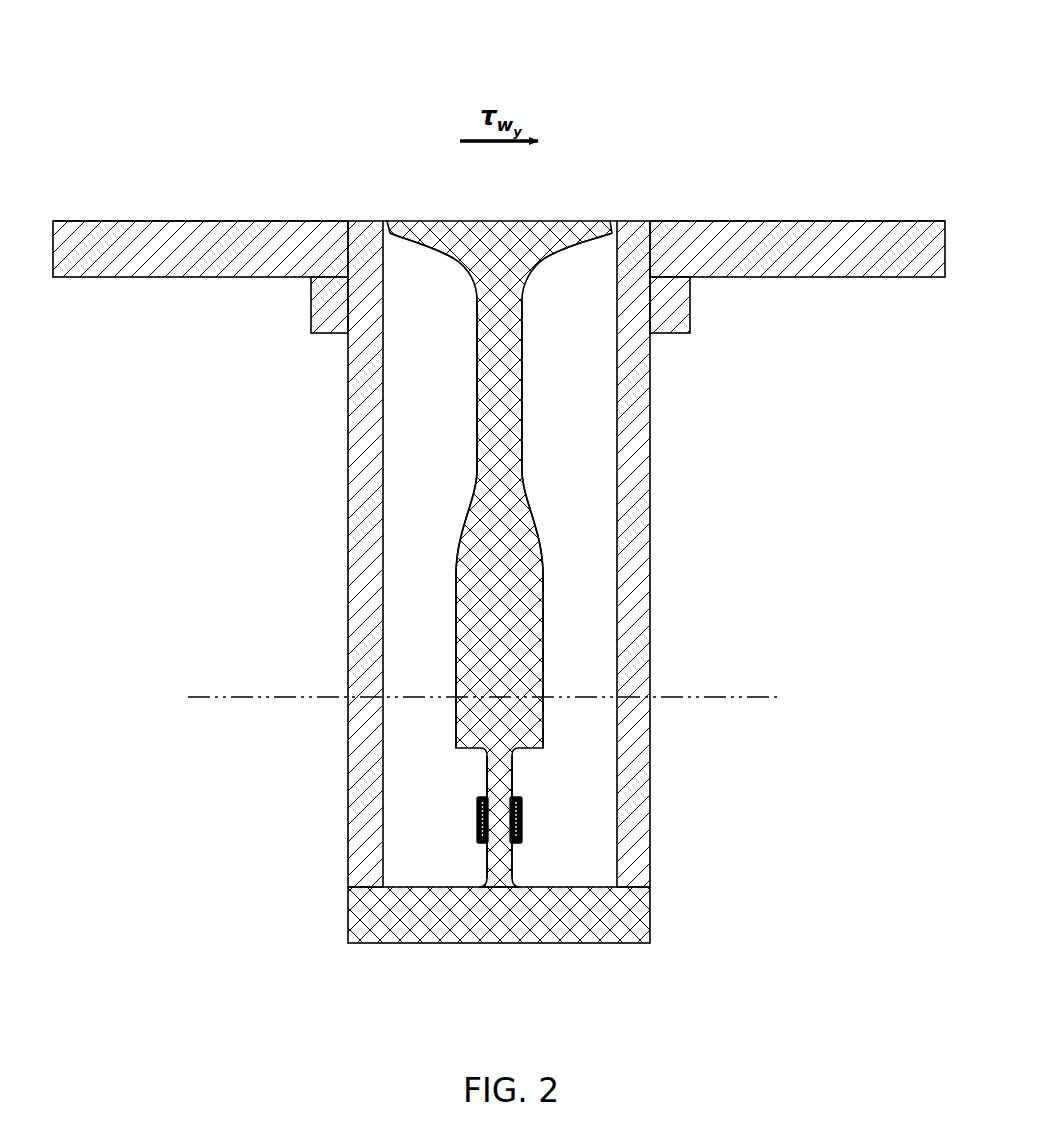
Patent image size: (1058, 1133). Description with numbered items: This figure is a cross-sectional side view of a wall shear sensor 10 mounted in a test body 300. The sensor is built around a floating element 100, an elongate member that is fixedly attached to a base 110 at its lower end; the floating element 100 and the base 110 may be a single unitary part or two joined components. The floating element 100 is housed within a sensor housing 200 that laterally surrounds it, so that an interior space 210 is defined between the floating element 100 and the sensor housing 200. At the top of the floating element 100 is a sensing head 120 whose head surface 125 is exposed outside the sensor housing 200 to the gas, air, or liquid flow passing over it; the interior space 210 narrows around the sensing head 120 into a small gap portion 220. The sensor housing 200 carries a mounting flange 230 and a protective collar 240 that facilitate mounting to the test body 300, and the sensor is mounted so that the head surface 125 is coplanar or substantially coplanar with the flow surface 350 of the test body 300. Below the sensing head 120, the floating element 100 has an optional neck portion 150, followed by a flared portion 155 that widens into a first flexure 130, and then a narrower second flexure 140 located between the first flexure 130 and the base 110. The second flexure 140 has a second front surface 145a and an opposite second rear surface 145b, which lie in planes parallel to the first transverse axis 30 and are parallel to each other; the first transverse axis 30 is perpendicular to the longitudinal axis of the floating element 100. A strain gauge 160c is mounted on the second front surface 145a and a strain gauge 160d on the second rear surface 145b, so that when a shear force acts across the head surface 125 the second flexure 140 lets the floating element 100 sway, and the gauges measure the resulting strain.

The wall shear sensor 10 is at (742, 117).
The first transverse axis 30 is at (230, 692).
The floating element 100 is at (538, 392).
The base 110 is at (348, 917).
The sensing head 120 is at (556, 242).
The head surface 125 is at (434, 220).
The first flexure 130 is at (545, 672).
The second flexure 140 is at (512, 870).
The second front surface 145a is at (487, 775).
The second rear surface 145b is at (575, 775).
The neck portion 150 is at (477, 382).
The flared portion 155 is at (462, 545).
The strain gauge 160c is at (474, 815).
The strain gauge 160d is at (523, 820).
The sensor housing 200 is at (348, 612).
The interior space 210 is at (425, 474).
The small gap portion 220 is at (385, 221).
The mounting flange 230 is at (672, 305).
The protective collar 240 is at (633, 230).
The test body 300 is at (157, 247).
The flow surface 350 is at (230, 221).